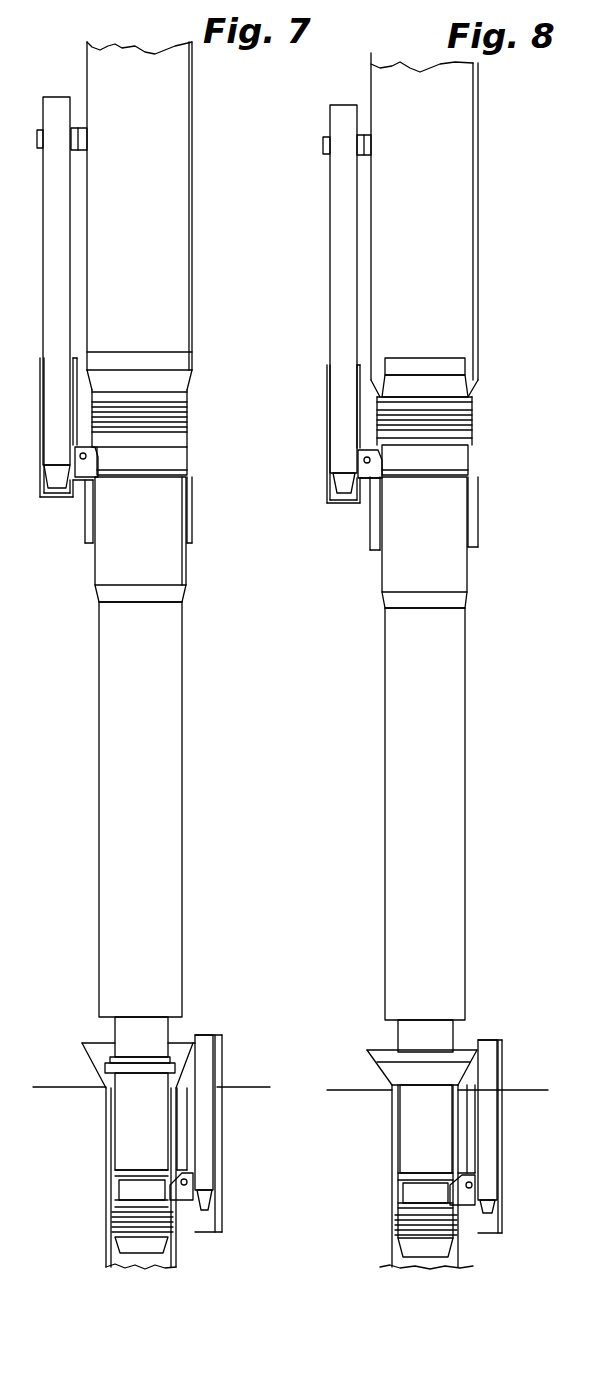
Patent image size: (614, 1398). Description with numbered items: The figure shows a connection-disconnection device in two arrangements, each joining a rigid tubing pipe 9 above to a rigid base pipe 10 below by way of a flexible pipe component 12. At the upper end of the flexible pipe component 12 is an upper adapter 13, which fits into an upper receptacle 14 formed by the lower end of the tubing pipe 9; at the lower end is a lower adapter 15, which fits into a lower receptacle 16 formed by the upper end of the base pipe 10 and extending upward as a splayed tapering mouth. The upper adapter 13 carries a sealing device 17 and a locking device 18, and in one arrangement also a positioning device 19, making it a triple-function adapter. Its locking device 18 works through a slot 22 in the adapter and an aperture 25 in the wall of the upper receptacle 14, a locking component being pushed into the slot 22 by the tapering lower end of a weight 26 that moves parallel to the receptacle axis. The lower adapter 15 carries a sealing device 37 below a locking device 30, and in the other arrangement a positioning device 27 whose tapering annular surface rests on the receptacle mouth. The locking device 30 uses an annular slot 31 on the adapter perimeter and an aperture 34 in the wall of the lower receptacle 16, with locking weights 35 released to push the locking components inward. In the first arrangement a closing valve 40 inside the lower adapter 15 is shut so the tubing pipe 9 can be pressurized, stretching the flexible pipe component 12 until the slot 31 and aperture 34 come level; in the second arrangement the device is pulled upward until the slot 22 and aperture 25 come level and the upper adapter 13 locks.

In FIG. 7, the tubing pipe 9 is at (177, 103).
In FIG. 8, the tubing pipe 9 is at (462, 118).
In FIG. 8, the base pipe 10 is at (460, 1255).
In FIG. 7, the flexible pipe component 12 is at (163, 817).
In FIG. 8, the flexible pipe component 12 is at (458, 827).
In FIG. 7, the upper adapter 13 is at (165, 518).
In FIG. 8, the upper adapter 13 is at (450, 518).
In FIG. 7, the upper receptacle 14 is at (74, 533).
In FIG. 8, the upper receptacle 14 is at (484, 543).
In FIG. 7, the lower adapter 15 is at (140, 1103).
In FIG. 8, the lower adapter 15 is at (425, 1147).
In FIG. 7, the lower receptacle 16 is at (110, 1157).
In FIG. 8, the lower receptacle 16 is at (391, 1164).
In FIG. 7, the sealing device 17 is at (182, 417).
In FIG. 8, the sealing device 17 is at (453, 430).
In FIG. 7, the locking device 18 is at (32, 434).
In FIG. 8, the locking device 18 is at (322, 435).
In FIG. 7, the positioning device 19 is at (202, 371).
In FIG. 7, the slot 22 is at (167, 462).
In FIG. 8, the slot 22 is at (453, 468).
In FIG. 8, the aperture 25 is at (360, 455).
In FIG. 7, the weight 26 is at (55, 278).
In FIG. 8, the weight 26 is at (343, 280).
In FIG. 8, the positioning device 27 is at (371, 1073).
In FIG. 7, the locking device 30 is at (228, 1190).
In FIG. 8, the locking device 30 is at (509, 1192).
In FIG. 7, the annular slot 31 is at (130, 1187).
In FIG. 8, the annular slot 31 is at (418, 1192).
In FIG. 7, the aperture 34 is at (184, 1163).
In FIG. 7, the locking weights 35 is at (205, 1125).
In FIG. 8, the locking weights 35 is at (487, 1113).
In FIG. 7, the sealing device 37 is at (127, 1220).
In FIG. 8, the sealing device 37 is at (403, 1222).
In FIG. 7, the closing valve 40 is at (92, 1140).